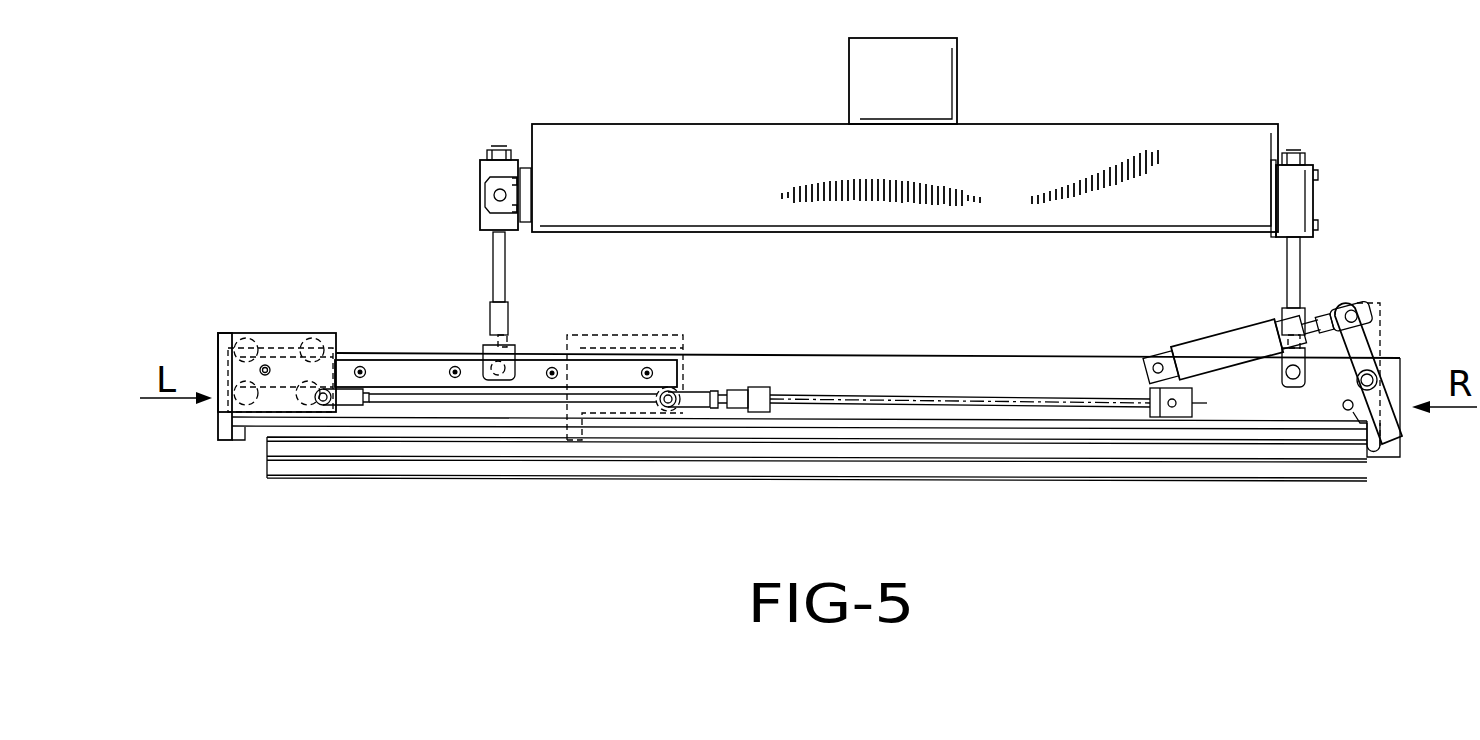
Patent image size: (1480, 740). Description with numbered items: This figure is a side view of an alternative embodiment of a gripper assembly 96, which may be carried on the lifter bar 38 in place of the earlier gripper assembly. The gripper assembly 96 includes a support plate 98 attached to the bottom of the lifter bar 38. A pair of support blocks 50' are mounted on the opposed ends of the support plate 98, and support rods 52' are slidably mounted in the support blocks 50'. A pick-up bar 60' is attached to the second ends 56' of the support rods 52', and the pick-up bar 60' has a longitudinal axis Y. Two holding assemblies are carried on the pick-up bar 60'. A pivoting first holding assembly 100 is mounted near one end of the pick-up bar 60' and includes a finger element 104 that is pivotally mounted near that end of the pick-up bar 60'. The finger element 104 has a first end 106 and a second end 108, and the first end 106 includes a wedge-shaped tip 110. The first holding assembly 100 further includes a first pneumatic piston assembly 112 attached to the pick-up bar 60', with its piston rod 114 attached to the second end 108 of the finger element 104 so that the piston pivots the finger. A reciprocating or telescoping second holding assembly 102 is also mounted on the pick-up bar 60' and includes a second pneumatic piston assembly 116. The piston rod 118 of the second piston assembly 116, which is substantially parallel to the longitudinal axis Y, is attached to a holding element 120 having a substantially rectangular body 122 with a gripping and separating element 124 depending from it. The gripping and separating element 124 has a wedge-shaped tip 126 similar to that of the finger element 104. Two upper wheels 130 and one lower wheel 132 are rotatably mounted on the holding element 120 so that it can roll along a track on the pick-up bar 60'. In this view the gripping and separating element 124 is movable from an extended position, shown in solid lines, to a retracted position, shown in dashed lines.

The lifter bar 38 is at (868, 72).
The support blocks 50' is at (907, 169).
The support rods 52' is at (888, 283).
The second ends 56' is at (855, 416).
The pick-up bar 60' is at (788, 351).
The gripper assembly 96 is at (372, 246).
The support plate 98 is at (655, 185).
The first holding assembly 100 is at (1406, 260).
The second holding assembly 102 is at (326, 320).
The finger element 104 is at (1360, 355).
The first end 106 is at (1385, 440).
The second end 108 is at (1385, 320).
The wedge-shaped tip 110 is at (1380, 445).
The first pneumatic piston assembly 112 is at (1176, 318).
The piston rod 114 is at (1305, 338).
The second pneumatic piston assembly 116 is at (728, 376).
The piston rod 118 is at (418, 398).
The holding element 120 is at (228, 298).
The rectangular body 122 is at (292, 333).
The gripping and separating element 124 is at (222, 428).
The wedge-shaped tip 126 is at (242, 440).
The upper wheels 130 is at (243, 348).
The lower wheel 132 is at (262, 402).
The longitudinal axis Y is at (832, 398).